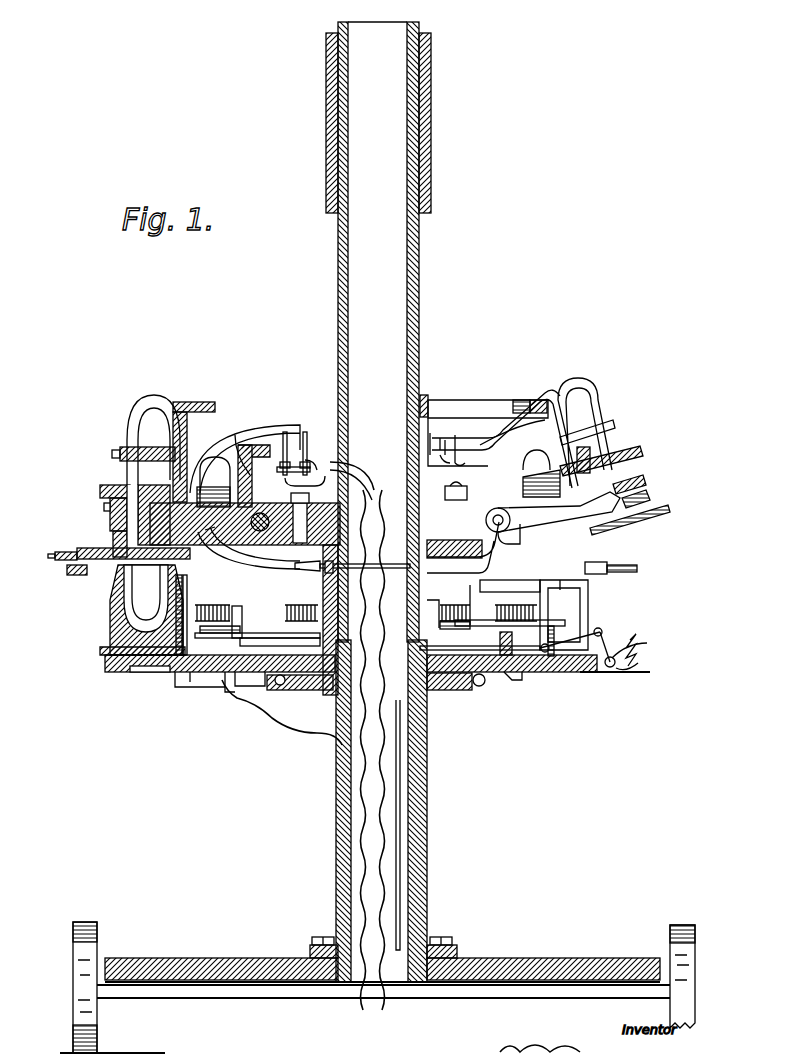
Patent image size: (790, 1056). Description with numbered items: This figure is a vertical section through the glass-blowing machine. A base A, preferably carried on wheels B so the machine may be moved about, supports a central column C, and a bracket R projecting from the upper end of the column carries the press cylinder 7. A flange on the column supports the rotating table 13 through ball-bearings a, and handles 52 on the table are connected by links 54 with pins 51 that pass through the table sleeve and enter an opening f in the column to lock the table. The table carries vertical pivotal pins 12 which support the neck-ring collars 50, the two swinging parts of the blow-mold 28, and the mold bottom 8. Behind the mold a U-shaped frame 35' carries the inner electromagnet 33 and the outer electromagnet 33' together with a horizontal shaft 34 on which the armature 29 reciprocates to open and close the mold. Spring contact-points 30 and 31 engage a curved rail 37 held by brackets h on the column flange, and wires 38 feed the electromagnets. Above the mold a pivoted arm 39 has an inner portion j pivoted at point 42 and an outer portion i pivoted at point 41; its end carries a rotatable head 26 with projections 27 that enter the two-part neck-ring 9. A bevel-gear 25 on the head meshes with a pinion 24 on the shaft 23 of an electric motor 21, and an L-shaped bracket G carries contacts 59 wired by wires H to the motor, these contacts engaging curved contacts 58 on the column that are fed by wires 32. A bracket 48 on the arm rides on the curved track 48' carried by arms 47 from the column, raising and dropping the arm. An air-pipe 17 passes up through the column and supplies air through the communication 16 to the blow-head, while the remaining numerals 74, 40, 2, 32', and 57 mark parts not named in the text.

The column C is at (412, 342).
The bracket R is at (431, 122).
The base A is at (228, 960).
The wheels B is at (92, 928).
The wires 32 is at (358, 723).
The pivot point 42 is at (376, 495).
The inner portion of arm j is at (372, 512).
The air-pipe 17 is at (400, 778).
The curved electric rail 37 is at (396, 690).
The opening f is at (426, 700).
The bracket 74 is at (448, 690).
The ball-bearings a is at (482, 688).
The cylinder 7 is at (482, 570).
The arm 40 is at (240, 538).
The bevel-gears 25 is at (104, 488).
The communication 16 is at (157, 402).
The brackets 48 is at (351, 422).
The curved track 48' is at (553, 378).
The pinions 24 is at (188, 462).
The electric motor 21 is at (378, 478).
The shafts 23 is at (391, 463).
The curved electrical contacts 58 is at (284, 478).
The wires H is at (244, 432).
The L-shaped brackets G is at (258, 440).
The electric contacts 59 is at (312, 462).
The outer portion of arm i is at (112, 518).
The head 26 is at (120, 541).
The projections 27 is at (175, 556).
The neck-rings 9 is at (54, 555).
The neck-ring-supporting collars 50 is at (70, 572).
The blow-molds 28 is at (110, 600).
The bottoms 8 is at (136, 664).
The pivotal pins 12 is at (190, 600).
The block 2 is at (238, 606).
The outer electromagnet 33' is at (338, 584).
The inner electromagnet 33 is at (302, 599).
The horizontal shaft 34 is at (268, 636).
The U-shaped bracket 35' is at (182, 695).
The contact-points 30 is at (215, 676).
The brackets h is at (262, 686).
The block 32' is at (300, 695).
The lever 57 is at (232, 690).
The contact-points 31 is at (258, 692).
The wires 38 is at (310, 742).
The arms 47 is at (445, 412).
The pivoted arms 39 is at (510, 538).
The pivot point 41 is at (505, 518).
The electric armature 29 is at (485, 590).
The links 54 is at (576, 636).
The operating-handles 52 is at (640, 650).
The pins 51 is at (548, 672).
The rotating table 13 is at (505, 672).